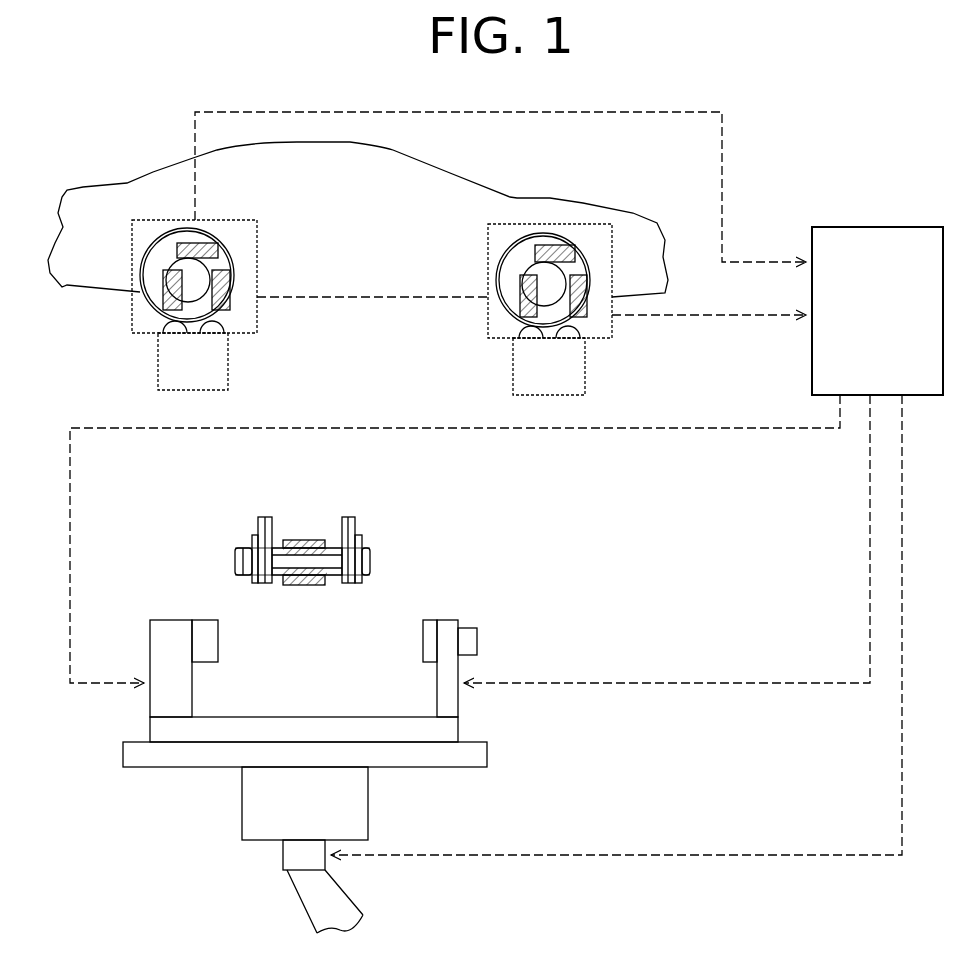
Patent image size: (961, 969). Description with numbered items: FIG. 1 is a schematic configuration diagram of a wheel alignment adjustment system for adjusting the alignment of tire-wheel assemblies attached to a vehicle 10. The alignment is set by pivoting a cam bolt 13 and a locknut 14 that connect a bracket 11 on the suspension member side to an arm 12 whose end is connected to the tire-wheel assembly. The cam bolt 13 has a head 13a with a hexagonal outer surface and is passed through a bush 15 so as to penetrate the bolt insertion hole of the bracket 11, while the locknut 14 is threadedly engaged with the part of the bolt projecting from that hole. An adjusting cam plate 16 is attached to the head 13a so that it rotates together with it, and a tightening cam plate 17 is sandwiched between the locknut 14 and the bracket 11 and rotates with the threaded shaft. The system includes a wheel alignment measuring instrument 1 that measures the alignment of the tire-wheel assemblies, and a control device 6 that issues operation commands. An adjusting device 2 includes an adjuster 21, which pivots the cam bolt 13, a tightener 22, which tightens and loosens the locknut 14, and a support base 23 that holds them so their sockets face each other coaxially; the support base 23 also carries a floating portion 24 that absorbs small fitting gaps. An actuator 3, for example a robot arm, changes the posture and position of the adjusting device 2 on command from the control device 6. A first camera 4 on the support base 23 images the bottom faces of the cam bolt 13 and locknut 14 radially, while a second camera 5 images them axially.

The vehicle 10 is at (158, 170).
The wheel alignment measuring instrument 1 is at (262, 250).
The control device 6 is at (880, 227).
The bracket 11 is at (265, 517).
The arm 12 is at (325, 582).
The cam bolt 13 is at (380, 565).
The head 13a is at (368, 550).
The locknut 14 is at (240, 548).
The bush 15 is at (272, 572).
The adjusting cam plate 16 is at (358, 540).
The tightening cam plate 17 is at (255, 537).
The adjusting device 2 is at (305, 684).
The adjuster 21 is at (430, 693).
The tightener 22 is at (205, 700).
The support base 23 is at (245, 652).
The floating portion 24 is at (368, 803).
The second camera 5 is at (478, 632).
The first camera 4 is at (283, 858).
The actuator 3 is at (298, 908).